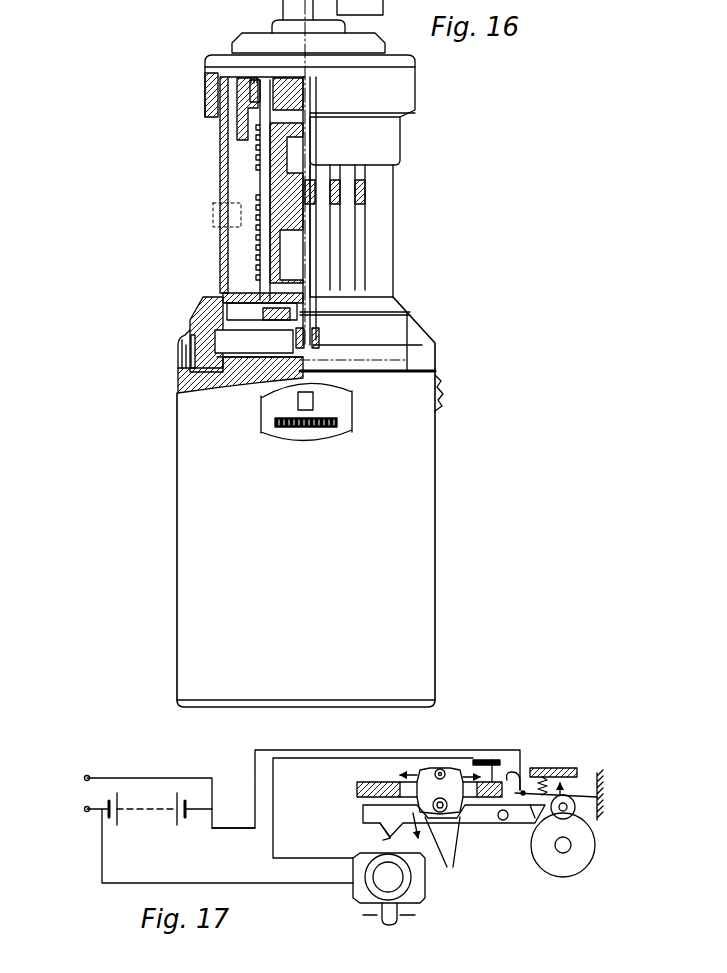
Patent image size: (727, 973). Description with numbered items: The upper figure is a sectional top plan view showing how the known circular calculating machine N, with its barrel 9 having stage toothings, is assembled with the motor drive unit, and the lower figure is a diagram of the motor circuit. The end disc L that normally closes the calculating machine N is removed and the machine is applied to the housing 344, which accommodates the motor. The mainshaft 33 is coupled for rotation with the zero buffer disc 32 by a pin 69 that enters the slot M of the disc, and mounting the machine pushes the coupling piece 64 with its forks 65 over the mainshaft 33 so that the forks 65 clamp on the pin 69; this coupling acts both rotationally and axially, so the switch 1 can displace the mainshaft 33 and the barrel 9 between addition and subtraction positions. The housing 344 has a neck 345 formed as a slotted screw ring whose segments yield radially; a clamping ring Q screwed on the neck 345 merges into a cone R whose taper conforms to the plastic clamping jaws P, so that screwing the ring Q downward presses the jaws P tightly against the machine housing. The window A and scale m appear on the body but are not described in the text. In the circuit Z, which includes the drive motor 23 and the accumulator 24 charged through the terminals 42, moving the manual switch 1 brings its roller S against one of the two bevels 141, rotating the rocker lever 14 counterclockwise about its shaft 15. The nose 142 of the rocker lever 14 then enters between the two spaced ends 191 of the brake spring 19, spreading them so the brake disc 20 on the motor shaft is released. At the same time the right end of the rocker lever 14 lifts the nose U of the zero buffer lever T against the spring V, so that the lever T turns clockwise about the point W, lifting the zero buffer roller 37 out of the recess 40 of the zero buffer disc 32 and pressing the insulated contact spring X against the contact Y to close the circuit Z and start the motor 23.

In FIG. 16, the circular calculating machine N is at (383, 143).
In FIG. 16, the barrel 9 is at (268, 250).
In FIG. 16, the zero buffer disc 32 is at (263, 318).
In FIG. 17, the zero buffer disc 32 is at (582, 862).
In FIG. 16, the cone R is at (212, 318).
In FIG. 16, the clamping jaws P is at (205, 330).
In FIG. 16, the clamping ring Q is at (190, 343).
In FIG. 16, the neck 345 is at (192, 358).
In FIG. 16, the housing 344 is at (177, 386).
In FIG. 16, the slot M is at (300, 330).
In FIG. 16, the mainshaft 33 is at (310, 308).
In FIG. 16, the pin 69 is at (313, 340).
In FIG. 16, the coupling piece 64 is at (353, 376).
In FIG. 16, the end disc L is at (395, 373).
In FIG. 16, the manual switch 1 is at (443, 396).
In FIG. 17, the manual switch 1 is at (447, 785).
In FIG. 16, the forks 65 is at (290, 367).
In FIG. 16, the window A is at (262, 428).
In FIG. 16, the scale m is at (312, 428).
In FIG. 17, the terminals 42 is at (84, 809).
In FIG. 17, the accumulator 24 is at (149, 800).
In FIG. 17, the circuit Z is at (229, 846).
In FIG. 17, the roller S is at (493, 788).
In FIG. 17, the contact Y is at (492, 760).
In FIG. 17, the contact spring X is at (513, 775).
In FIG. 17, the spring V is at (543, 770).
In FIG. 17, the zero buffer roller 37 is at (572, 785).
In FIG. 17, the zero buffer lever T is at (583, 790).
In FIG. 17, the point W is at (599, 793).
In FIG. 17, the recess 40 is at (575, 812).
In FIG. 17, the rocker lever 14 is at (476, 822).
In FIG. 17, the shaft 15 is at (503, 821).
In FIG. 17, the nose U is at (531, 820).
In FIG. 17, the bevels 141 is at (438, 852).
In FIG. 17, the nose 142 is at (385, 830).
In FIG. 17, the spaced ends 191 is at (385, 843).
In FIG. 17, the brake disc 20 is at (378, 900).
In FIG. 17, the drive motor 23 is at (358, 890).
In FIG. 17, the brake spring 19 is at (384, 918).